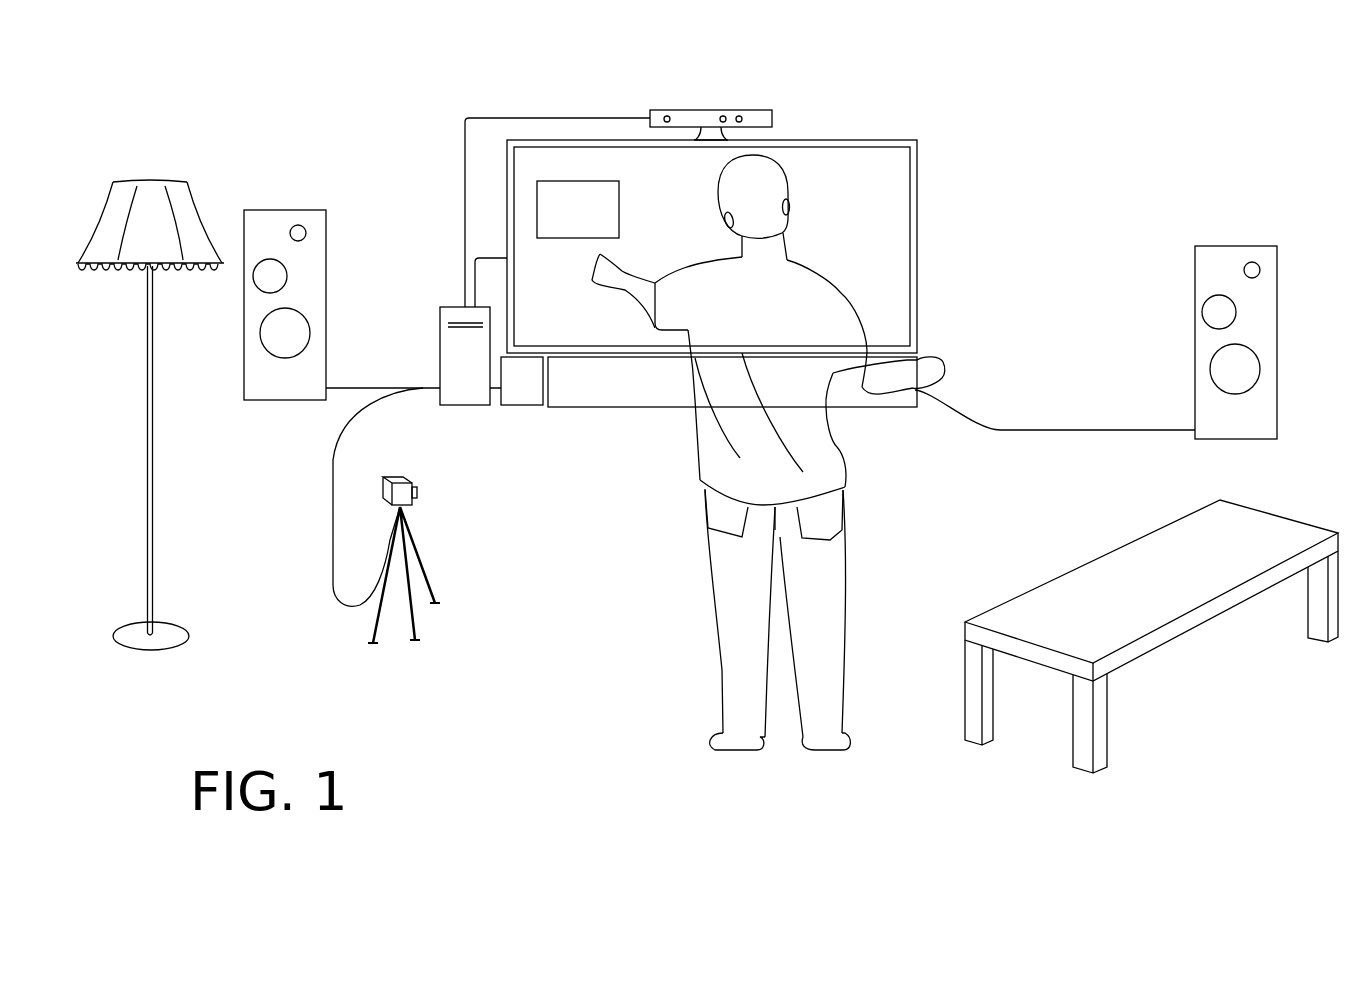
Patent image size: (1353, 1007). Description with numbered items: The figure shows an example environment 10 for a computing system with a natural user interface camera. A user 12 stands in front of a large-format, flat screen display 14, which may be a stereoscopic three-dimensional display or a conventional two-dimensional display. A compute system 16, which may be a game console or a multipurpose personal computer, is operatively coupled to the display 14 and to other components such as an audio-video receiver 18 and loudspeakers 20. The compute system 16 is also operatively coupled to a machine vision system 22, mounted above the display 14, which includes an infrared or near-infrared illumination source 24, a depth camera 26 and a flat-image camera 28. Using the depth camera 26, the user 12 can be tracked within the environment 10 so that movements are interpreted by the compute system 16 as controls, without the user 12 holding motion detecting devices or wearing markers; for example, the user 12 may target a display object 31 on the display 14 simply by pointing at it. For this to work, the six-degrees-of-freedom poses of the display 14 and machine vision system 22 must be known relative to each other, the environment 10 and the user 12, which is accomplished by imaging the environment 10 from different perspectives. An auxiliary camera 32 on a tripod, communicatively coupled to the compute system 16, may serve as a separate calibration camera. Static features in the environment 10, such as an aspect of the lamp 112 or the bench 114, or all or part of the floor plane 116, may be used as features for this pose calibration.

The environment 10 is at (1041, 382).
The user 12 is at (785, 308).
The display 14 is at (866, 185).
The compute system 16 is at (453, 396).
The audio-video receiver 18 is at (510, 394).
The loudspeakers 20 is at (273, 394).
The machine vision system 22 is at (742, 96).
The illumination source 24 is at (714, 55).
The depth camera 26 is at (660, 56).
The flat-image camera 28 is at (760, 74).
The display object 31 is at (566, 221).
The auxiliary camera 32 is at (395, 478).
The lamp 112 is at (189, 634).
The bench 114 is at (1151, 586).
The floor plane 116 is at (545, 657).